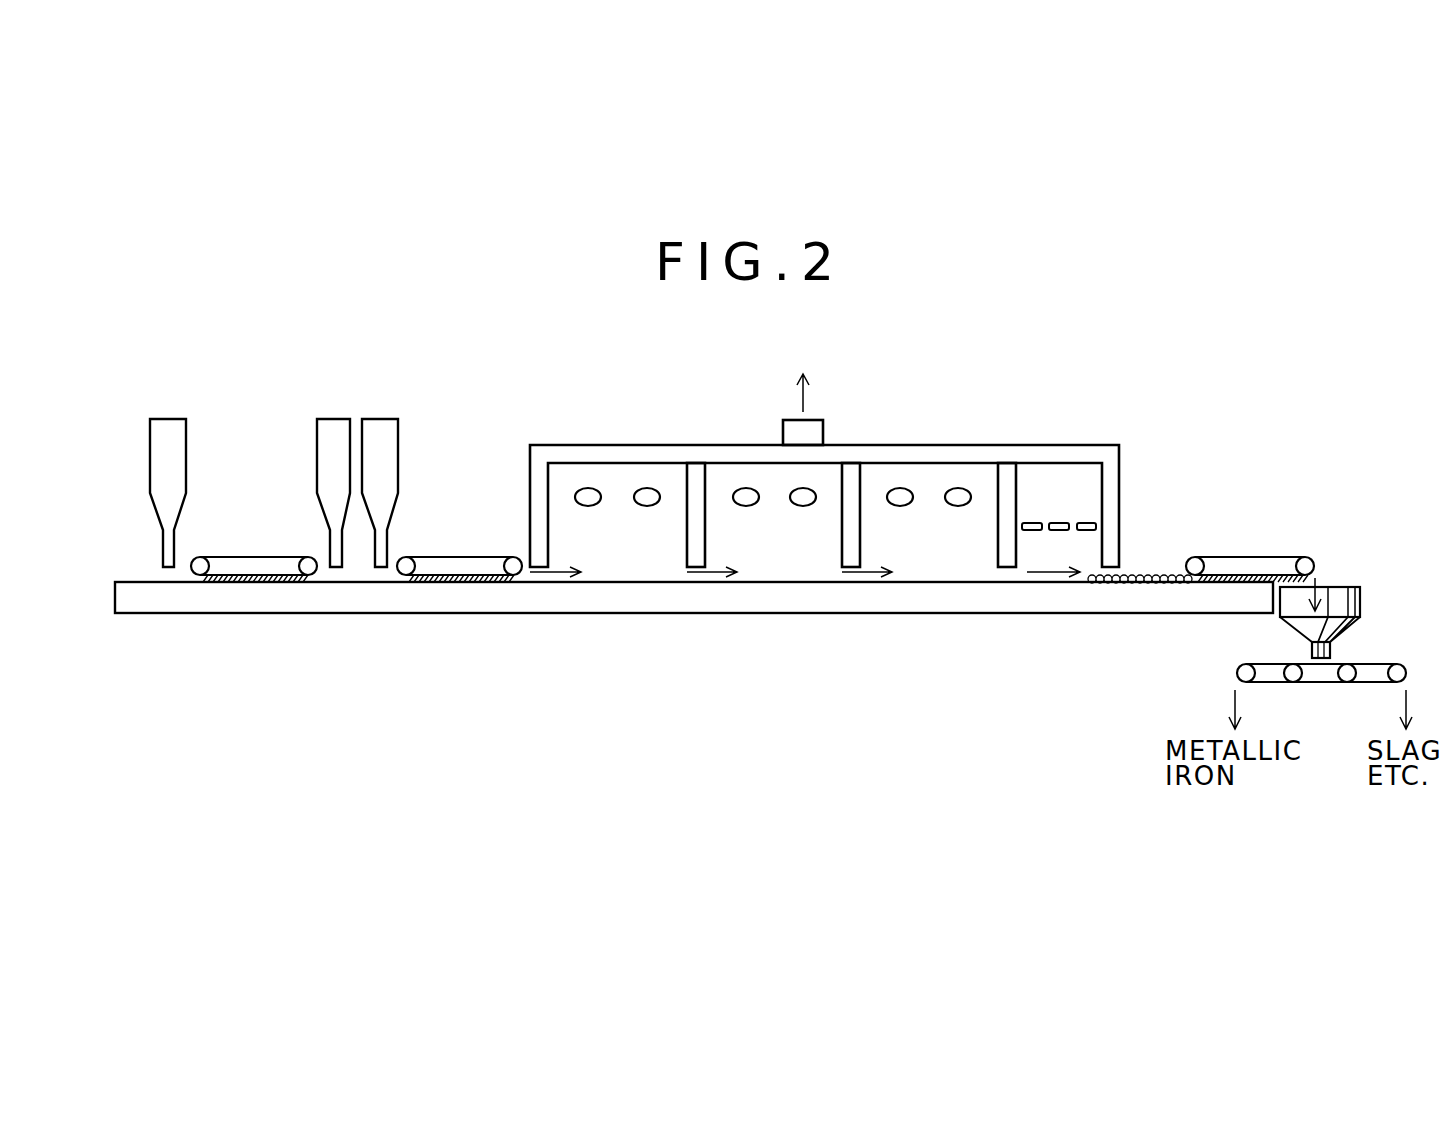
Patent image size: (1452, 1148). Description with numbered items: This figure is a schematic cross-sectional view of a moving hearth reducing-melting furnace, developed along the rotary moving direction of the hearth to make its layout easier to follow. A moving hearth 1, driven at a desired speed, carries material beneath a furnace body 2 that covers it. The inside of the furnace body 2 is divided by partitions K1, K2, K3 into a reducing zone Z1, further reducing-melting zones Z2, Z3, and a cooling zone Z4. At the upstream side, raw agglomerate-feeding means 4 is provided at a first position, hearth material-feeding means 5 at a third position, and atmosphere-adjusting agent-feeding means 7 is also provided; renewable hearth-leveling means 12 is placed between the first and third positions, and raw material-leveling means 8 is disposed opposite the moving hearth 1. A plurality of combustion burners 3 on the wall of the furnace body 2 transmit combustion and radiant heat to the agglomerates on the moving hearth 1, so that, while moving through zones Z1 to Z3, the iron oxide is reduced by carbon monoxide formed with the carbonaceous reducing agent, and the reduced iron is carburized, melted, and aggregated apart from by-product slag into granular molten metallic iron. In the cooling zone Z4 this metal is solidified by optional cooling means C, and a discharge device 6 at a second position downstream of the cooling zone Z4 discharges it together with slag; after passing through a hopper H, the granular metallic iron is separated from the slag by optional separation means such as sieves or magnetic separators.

The moving hearth 1 is at (672, 595).
The furnace body 2 is at (1110, 462).
The combustion burners 3 is at (588, 506).
The raw agglomerate-feeding means 4 is at (378, 430).
The hearth material-feeding means 5 is at (168, 430).
The discharge device 6 is at (1257, 543).
The atmosphere-adjusting agent-feeding means 7 is at (333, 430).
The raw material-leveling means 8 is at (467, 543).
The renewable hearth-leveling means 12 is at (262, 543).
The partition K1 is at (697, 478).
The partition K2 is at (851, 478).
The partition K3 is at (1008, 478).
The reducing zone Z1 is at (630, 565).
The reducing-melting zone Z2 is at (785, 565).
The reducing-melting zone Z3 is at (942, 565).
The cooling zone Z4 is at (1053, 565).
The cooling means C is at (1085, 521).
The hopper H is at (1342, 602).